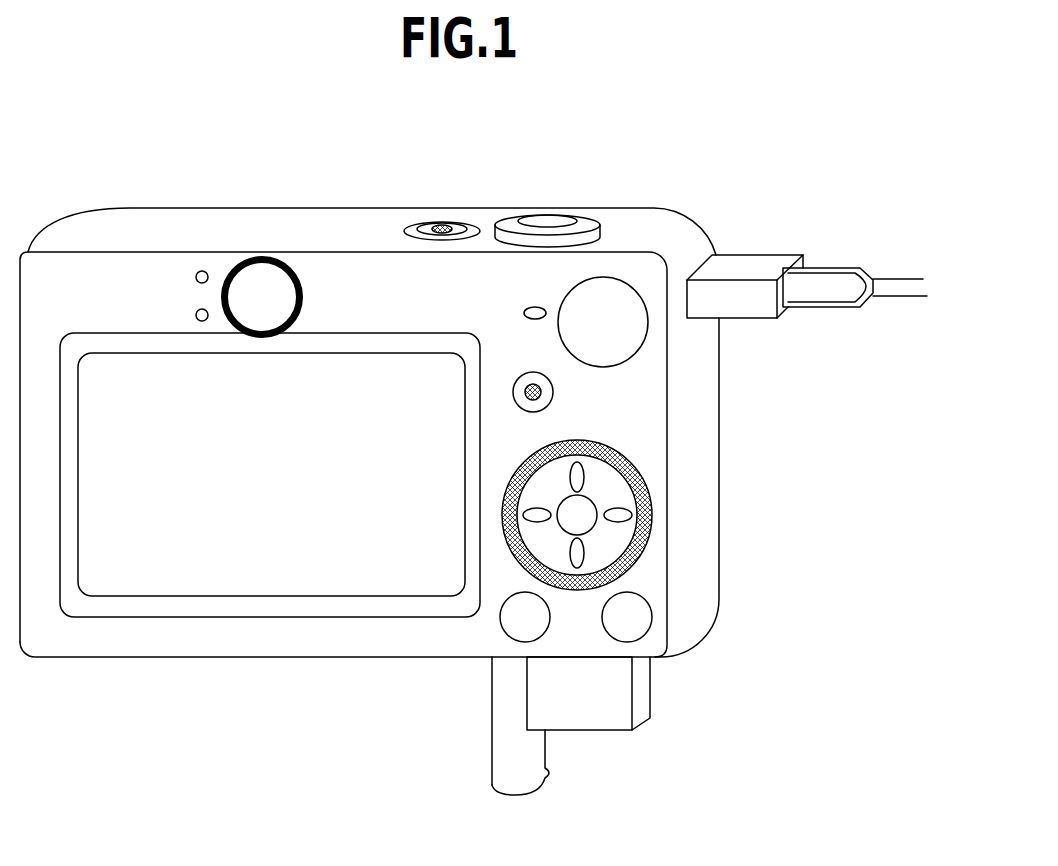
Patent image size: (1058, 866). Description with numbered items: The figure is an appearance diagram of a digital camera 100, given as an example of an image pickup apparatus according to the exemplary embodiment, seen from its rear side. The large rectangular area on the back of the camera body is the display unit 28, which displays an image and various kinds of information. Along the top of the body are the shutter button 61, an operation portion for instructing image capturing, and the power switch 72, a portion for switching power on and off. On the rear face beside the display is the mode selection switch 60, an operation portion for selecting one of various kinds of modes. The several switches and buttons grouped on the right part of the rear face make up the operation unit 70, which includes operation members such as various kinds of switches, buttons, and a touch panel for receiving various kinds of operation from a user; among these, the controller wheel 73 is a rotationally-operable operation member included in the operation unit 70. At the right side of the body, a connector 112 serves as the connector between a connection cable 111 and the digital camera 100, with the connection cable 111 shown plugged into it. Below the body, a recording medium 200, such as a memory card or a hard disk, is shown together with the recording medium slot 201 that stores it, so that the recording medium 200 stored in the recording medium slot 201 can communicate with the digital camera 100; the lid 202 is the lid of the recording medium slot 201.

The display unit 28 is at (158, 383).
The mode selection switch 60 is at (628, 297).
The shutter button 61 is at (558, 215).
The operation unit 70 is at (573, 247).
The power switch 72 is at (443, 220).
The controller wheel 73 is at (528, 458).
The digital camera 100 is at (167, 699).
The connection cable 111 is at (833, 273).
The connector 112 is at (698, 255).
The recording medium 200 is at (607, 695).
The recording medium slot 201 is at (552, 660).
The lid 202 is at (537, 792).